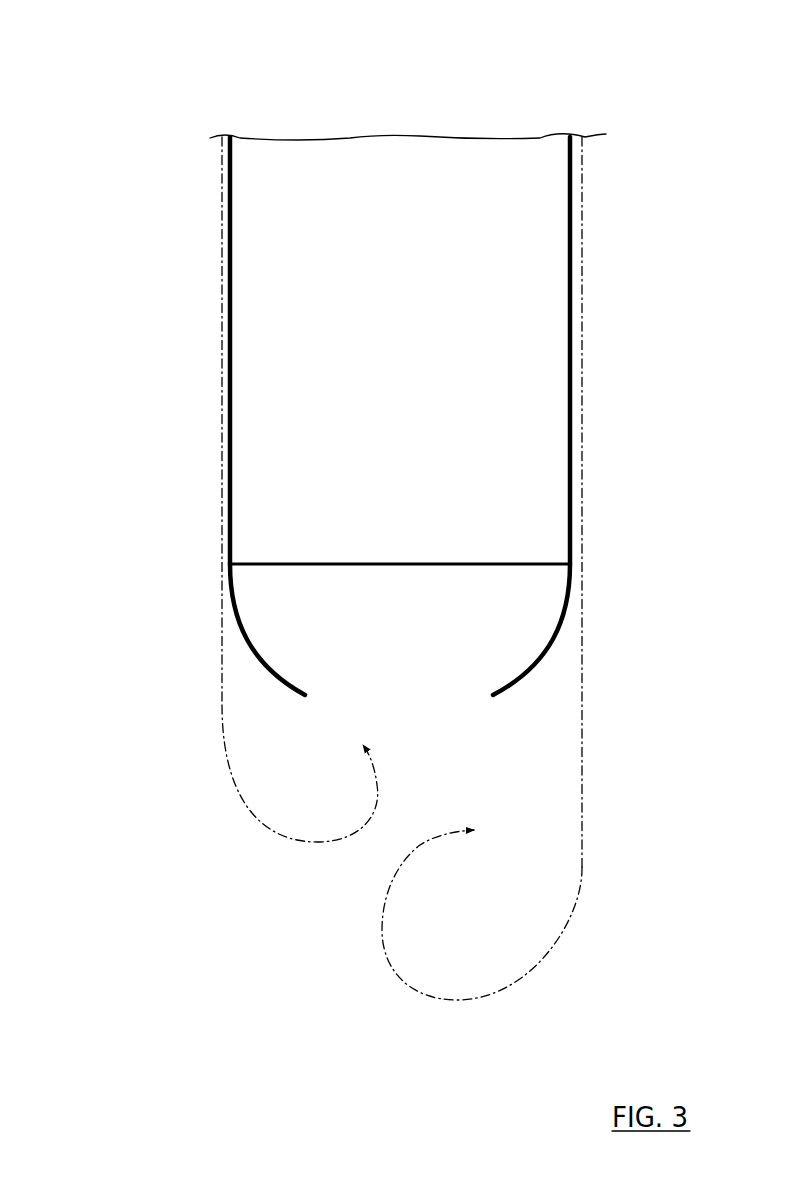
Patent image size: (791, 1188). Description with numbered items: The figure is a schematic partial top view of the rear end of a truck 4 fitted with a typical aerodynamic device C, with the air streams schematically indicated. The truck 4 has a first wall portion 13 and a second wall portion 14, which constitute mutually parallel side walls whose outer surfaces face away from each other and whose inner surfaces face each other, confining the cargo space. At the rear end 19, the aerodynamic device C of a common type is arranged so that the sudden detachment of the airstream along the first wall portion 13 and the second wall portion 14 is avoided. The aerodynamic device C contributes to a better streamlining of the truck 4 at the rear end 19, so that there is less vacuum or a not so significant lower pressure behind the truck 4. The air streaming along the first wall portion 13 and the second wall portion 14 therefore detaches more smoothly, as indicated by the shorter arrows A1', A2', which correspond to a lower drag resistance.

The truck 4 is at (377, 448).
The first wall portion 13 is at (228, 430).
The second wall portion 14 is at (572, 403).
The aerodynamic device C is at (513, 675).
The rear end 19 is at (442, 699).
The arrow A1' is at (228, 753).
The arrow A2' is at (550, 915).